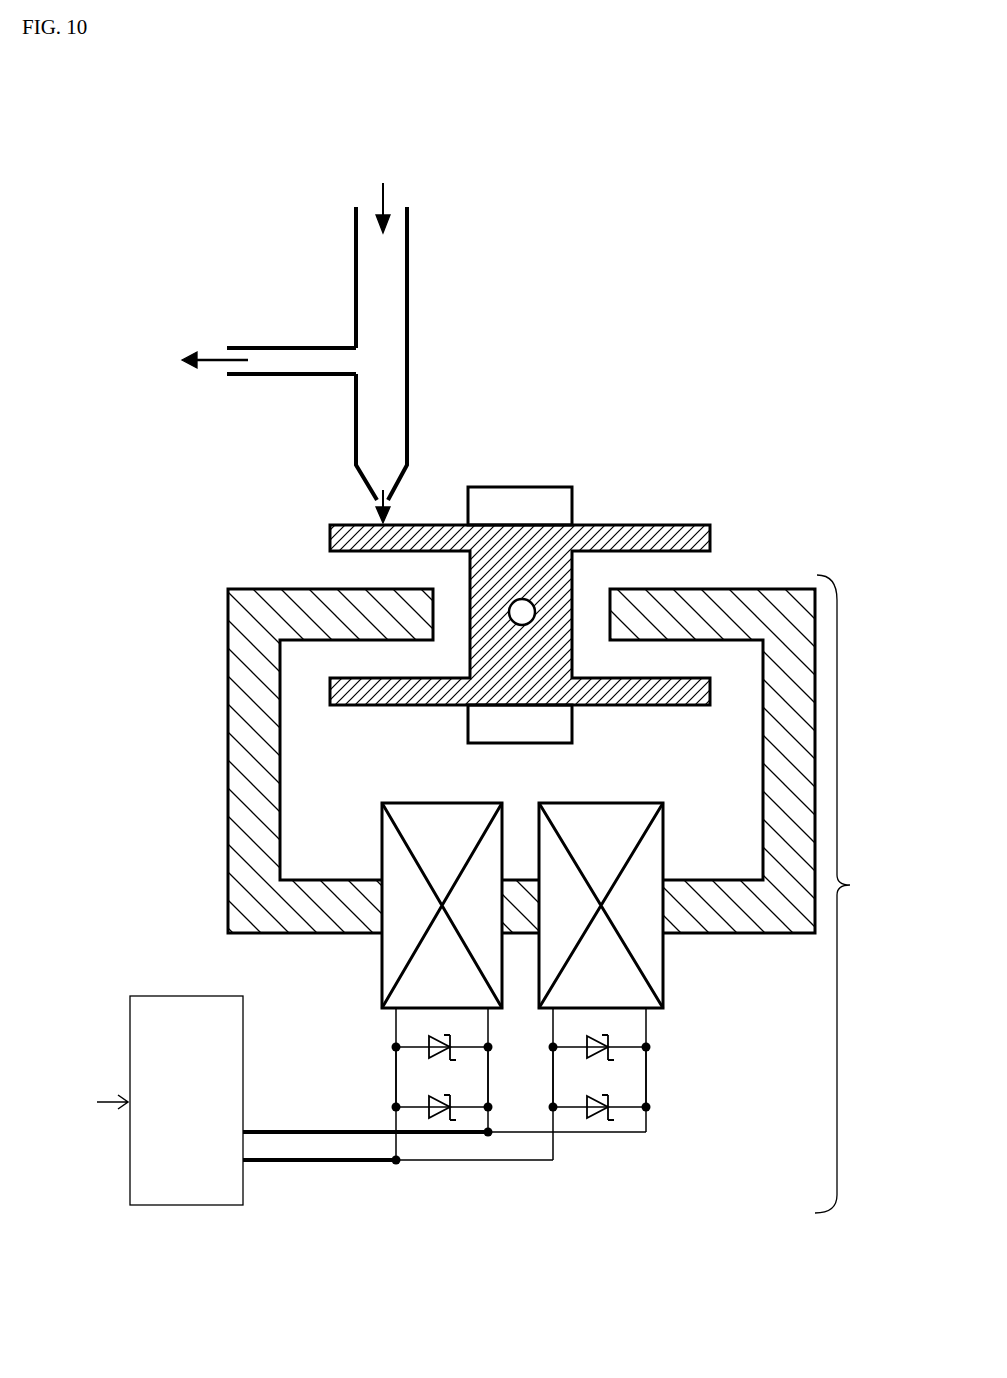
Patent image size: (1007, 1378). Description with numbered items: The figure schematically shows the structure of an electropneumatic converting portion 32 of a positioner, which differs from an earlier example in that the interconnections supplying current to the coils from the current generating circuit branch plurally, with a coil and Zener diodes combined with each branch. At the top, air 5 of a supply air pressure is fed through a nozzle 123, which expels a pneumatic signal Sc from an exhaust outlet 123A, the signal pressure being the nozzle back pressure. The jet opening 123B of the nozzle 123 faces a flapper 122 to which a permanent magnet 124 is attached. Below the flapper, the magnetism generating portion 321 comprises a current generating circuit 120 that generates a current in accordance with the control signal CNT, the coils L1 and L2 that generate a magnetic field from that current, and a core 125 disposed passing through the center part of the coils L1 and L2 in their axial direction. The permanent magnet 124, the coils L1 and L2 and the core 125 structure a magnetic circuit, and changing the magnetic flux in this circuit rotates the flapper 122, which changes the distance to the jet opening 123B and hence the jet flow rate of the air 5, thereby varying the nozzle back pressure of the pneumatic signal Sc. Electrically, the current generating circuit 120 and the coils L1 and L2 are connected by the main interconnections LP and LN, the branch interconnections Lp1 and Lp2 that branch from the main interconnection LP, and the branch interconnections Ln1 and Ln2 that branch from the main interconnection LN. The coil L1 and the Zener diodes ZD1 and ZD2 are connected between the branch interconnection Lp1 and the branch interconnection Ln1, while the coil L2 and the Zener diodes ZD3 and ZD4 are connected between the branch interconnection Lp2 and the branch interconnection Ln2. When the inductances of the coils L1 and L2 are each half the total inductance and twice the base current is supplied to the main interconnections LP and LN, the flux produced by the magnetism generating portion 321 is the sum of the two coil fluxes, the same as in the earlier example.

The electropneumatic converting portion 32 is at (801, 118).
The air 5 is at (383, 195).
The nozzle 123 is at (409, 296).
The exhaust outlet 123A is at (226, 354).
The jet opening 123B is at (378, 505).
The permanent magnet 124 is at (574, 488).
The flapper 122 is at (711, 524).
The core 125 is at (246, 588).
The magnetism generating portion 321 is at (856, 894).
The current generating circuit 120 is at (143, 995).
The coil L1 is at (381, 975).
The coil L2 is at (664, 975).
The Zener diode ZD1 is at (429, 1038).
The Zener diode ZD2 is at (429, 1098).
The Zener diode ZD3 is at (587, 1038).
The Zener diode ZD4 is at (587, 1098).
The branch interconnection Ln1 is at (395, 1060).
The branch interconnection Ln2 is at (554, 1156).
The branch interconnection Lp1 is at (489, 1072).
The branch interconnection Lp2 is at (647, 1123).
The main interconnection LP is at (282, 1130).
The main interconnection LN is at (282, 1163).
The control signal CNT is at (90, 1102).
The pneumatic signal Sc is at (201, 361).